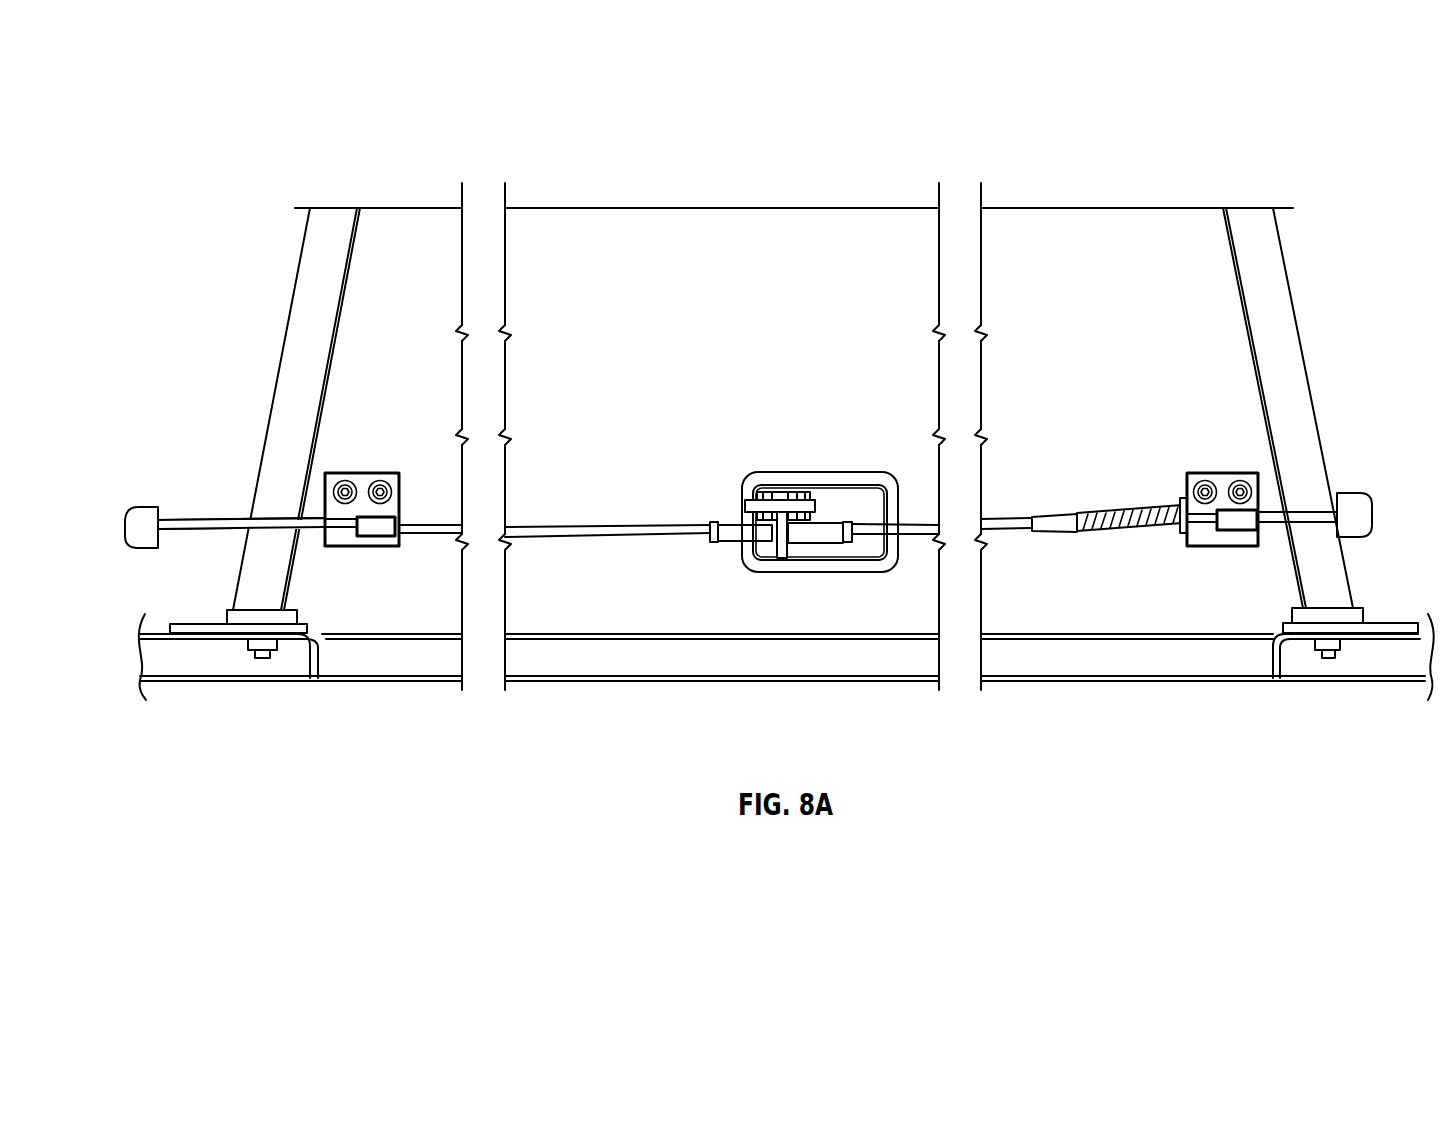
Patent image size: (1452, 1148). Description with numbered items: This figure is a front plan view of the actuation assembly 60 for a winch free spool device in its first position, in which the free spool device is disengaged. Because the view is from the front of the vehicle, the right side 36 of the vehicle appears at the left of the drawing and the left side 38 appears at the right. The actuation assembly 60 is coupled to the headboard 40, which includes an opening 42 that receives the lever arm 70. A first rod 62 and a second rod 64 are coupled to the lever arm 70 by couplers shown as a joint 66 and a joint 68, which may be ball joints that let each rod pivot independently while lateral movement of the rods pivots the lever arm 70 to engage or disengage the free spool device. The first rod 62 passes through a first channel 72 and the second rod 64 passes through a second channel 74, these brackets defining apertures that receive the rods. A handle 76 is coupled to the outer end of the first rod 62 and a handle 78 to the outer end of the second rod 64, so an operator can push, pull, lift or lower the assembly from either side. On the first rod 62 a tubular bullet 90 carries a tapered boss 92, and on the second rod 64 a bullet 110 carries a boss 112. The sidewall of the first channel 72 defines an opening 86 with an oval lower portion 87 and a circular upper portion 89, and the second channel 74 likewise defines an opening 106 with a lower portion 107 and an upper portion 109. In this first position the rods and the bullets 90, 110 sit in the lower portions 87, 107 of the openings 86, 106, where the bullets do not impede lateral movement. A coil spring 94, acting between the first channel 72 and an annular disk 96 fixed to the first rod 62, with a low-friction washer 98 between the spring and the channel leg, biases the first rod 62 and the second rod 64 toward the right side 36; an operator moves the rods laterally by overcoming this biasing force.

The right side 36 is at (182, 604).
The left side 38 is at (1386, 612).
The headboard 40 is at (1275, 282).
The opening 42 is at (823, 485).
The actuation assembly 60 is at (640, 383).
The first rod 62 is at (997, 525).
The second rod 64 is at (657, 530).
The joint 66 is at (835, 537).
The joint 68 is at (727, 541).
The lever arm 70 is at (810, 500).
The first channel 72 is at (1223, 482).
The second channel 74 is at (358, 473).
The handle 76 is at (1373, 517).
The handle 78 is at (140, 507).
The opening 86 is at (1261, 508).
The lower portion 87 is at (1261, 527).
The upper portion 89 is at (1261, 485).
The bullet 90 is at (1243, 518).
The boss 92 is at (1213, 514).
The coil spring 94 is at (1127, 520).
The annular disk 96 is at (1077, 522).
The washer 98 is at (1178, 507).
The opening 106 is at (402, 520).
The lower portion 107 is at (402, 537).
The upper portion 109 is at (402, 508).
The bullet 110 is at (390, 532).
The boss 112 is at (357, 528).